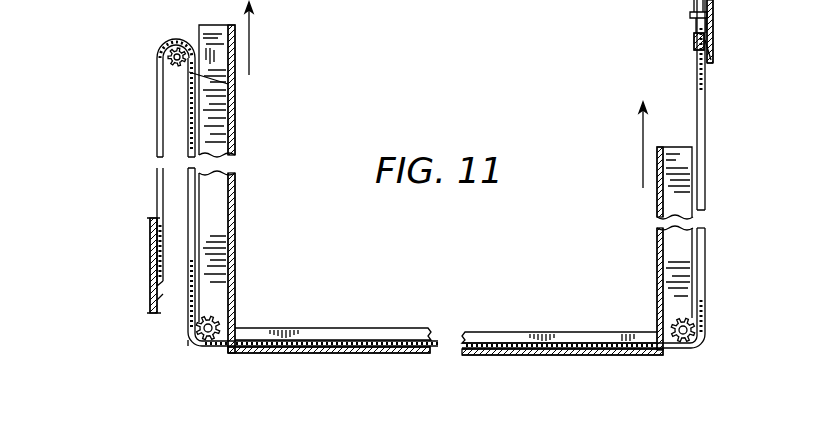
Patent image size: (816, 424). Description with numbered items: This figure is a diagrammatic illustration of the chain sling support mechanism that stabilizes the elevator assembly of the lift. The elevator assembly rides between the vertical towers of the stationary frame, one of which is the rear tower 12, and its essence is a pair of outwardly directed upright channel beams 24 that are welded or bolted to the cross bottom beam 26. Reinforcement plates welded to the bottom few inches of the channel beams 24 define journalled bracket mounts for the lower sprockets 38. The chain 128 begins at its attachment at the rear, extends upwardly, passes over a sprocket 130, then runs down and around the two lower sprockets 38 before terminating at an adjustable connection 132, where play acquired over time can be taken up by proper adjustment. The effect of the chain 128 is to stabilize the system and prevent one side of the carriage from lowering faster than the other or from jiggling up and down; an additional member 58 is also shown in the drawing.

The rear tower 12 is at (149, 301).
The upright channel beams 24 is at (236, 113).
The cross bottom beam 26 is at (363, 352).
The lower sprockets 38 is at (203, 343).
The vertical support 58 is at (596, 31).
The chain 128 is at (156, 202).
The sprocket 130 is at (175, 40).
The adjustable connection 132 is at (692, 16).